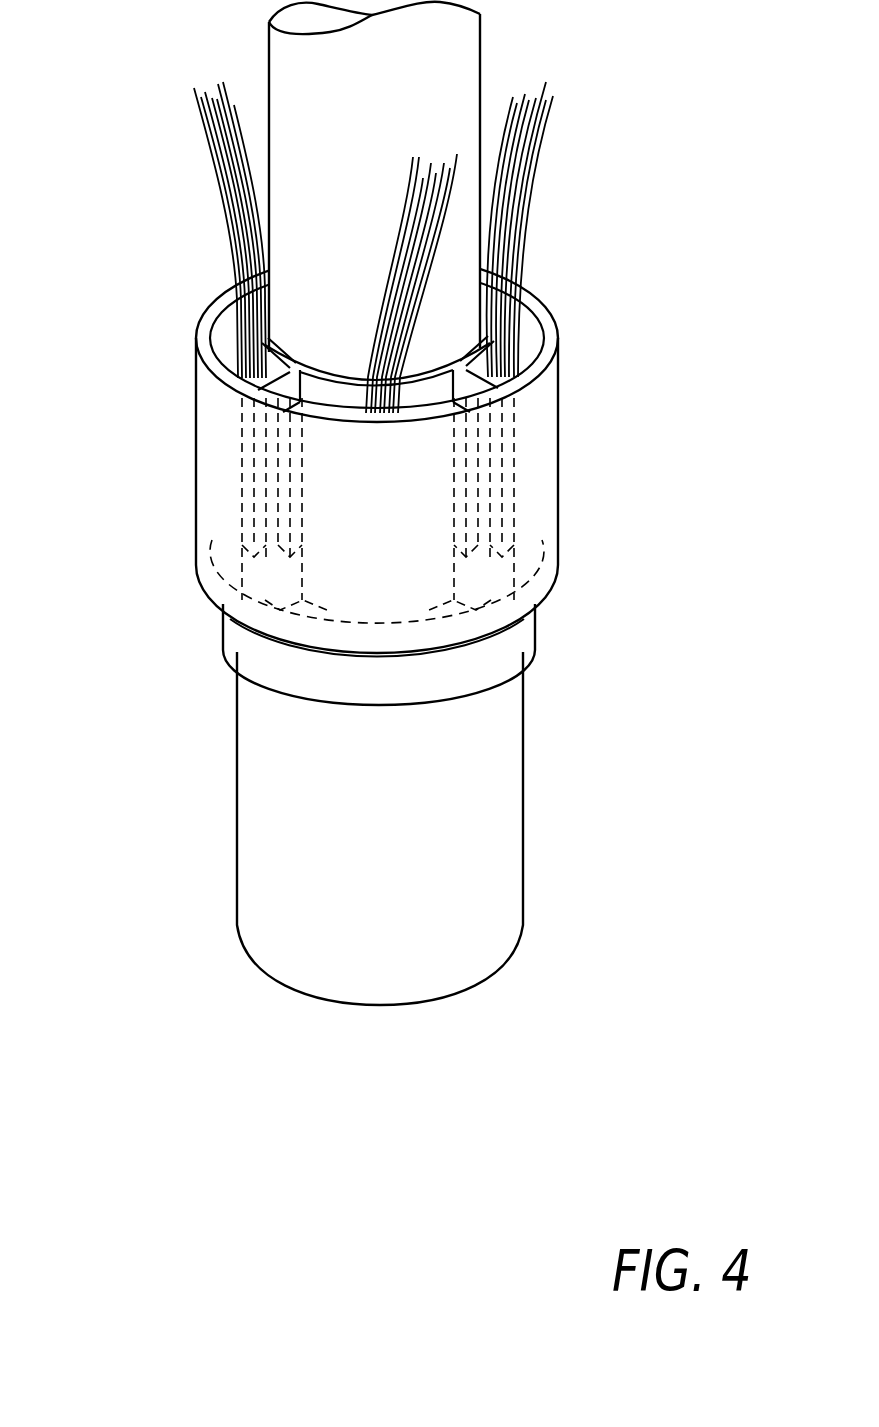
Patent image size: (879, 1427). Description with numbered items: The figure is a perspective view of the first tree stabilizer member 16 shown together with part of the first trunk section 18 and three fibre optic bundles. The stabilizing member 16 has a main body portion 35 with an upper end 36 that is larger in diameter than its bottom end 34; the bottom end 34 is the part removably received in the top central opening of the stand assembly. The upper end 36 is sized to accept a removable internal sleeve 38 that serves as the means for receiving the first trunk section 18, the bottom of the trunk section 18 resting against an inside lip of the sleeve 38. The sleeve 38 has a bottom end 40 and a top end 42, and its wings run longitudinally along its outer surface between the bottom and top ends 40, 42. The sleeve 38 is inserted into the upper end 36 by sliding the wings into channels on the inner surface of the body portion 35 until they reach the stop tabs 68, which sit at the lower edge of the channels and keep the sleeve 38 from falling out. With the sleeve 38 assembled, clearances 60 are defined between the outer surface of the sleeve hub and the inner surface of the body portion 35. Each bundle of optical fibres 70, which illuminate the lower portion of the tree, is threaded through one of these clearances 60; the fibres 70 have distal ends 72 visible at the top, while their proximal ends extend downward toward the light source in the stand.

The first tree stabilizer member 16 is at (168, 633).
The first trunk section 18 is at (482, 40).
The bottom end 34 is at (523, 765).
The main body portion 35 is at (558, 552).
The upper end 36 is at (558, 407).
The internal sleeve 38 is at (257, 392).
The bottom end 40 is at (323, 610).
The top end 42 is at (287, 357).
The clearances 60 is at (222, 304).
The stop tab 68 is at (290, 545).
The optical fibres 70 is at (542, 162).
The distal ends 72 is at (193, 90).